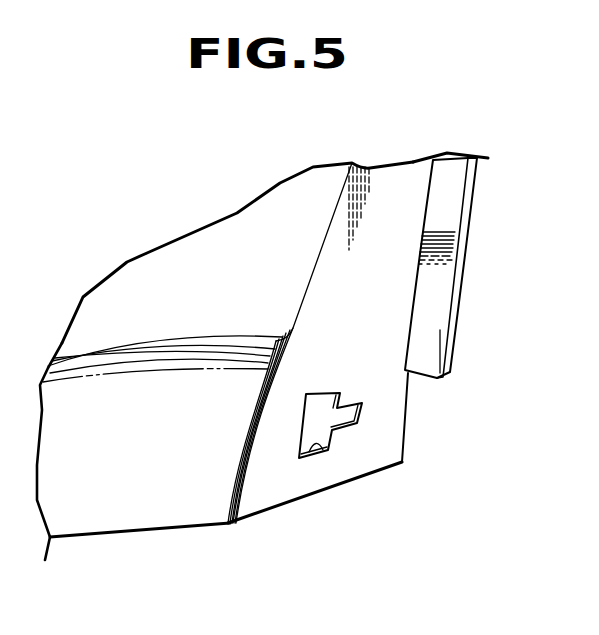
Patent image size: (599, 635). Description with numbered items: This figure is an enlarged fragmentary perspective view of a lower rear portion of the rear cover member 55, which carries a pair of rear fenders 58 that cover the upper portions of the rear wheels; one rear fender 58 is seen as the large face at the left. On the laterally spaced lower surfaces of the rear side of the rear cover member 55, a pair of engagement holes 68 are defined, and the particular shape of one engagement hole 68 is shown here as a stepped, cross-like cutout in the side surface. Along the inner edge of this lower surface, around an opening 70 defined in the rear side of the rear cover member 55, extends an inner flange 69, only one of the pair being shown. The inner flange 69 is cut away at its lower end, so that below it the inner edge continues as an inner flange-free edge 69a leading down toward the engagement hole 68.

The rear cover member 55 is at (253, 245).
The rear fender 58 is at (152, 492).
The engagement hole 68 is at (318, 442).
The inner flange 69 is at (437, 278).
The inner flange-free edge 69a is at (408, 413).
The opening 70 is at (488, 208).